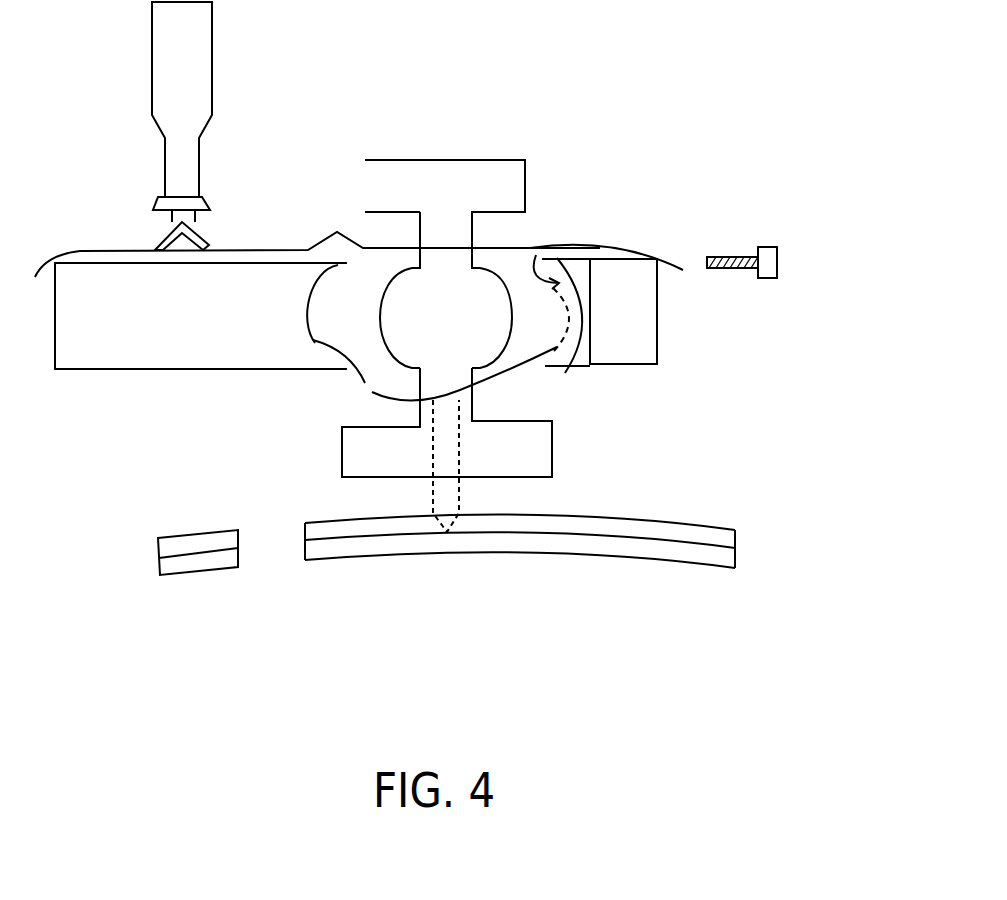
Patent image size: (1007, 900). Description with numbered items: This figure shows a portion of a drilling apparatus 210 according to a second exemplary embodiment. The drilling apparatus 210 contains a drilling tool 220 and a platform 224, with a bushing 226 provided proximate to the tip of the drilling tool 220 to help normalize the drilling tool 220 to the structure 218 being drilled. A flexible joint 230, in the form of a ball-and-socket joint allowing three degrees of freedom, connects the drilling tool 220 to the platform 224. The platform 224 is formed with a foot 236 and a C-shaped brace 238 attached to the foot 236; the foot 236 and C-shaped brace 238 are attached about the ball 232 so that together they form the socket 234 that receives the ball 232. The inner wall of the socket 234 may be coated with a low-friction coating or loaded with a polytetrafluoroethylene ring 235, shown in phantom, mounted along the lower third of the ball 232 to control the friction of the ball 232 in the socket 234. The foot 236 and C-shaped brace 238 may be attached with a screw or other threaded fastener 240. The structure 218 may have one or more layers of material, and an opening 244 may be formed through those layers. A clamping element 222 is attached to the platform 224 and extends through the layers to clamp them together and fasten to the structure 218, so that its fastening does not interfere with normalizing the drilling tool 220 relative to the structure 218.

The drilling apparatus 210 is at (611, 70).
The structure 218 is at (723, 505).
The drilling tool 220 is at (452, 523).
The clamping element 222 is at (158, 246).
The platform 224 is at (336, 228).
The bushing 226 is at (552, 440).
The flexible joint 230 is at (596, 315).
The ball 232 is at (505, 290).
The socket 234 is at (368, 390).
The polytetrafluoroethylene ring 235 is at (540, 249).
The foot 236 is at (122, 370).
The C-shaped brace 238 is at (660, 337).
The threaded fastener 240 is at (753, 260).
The opening 244 is at (238, 538).